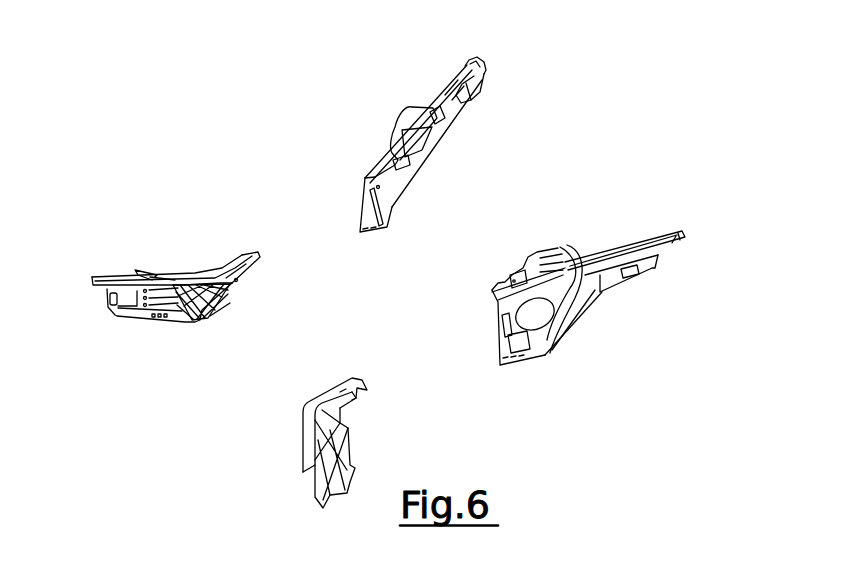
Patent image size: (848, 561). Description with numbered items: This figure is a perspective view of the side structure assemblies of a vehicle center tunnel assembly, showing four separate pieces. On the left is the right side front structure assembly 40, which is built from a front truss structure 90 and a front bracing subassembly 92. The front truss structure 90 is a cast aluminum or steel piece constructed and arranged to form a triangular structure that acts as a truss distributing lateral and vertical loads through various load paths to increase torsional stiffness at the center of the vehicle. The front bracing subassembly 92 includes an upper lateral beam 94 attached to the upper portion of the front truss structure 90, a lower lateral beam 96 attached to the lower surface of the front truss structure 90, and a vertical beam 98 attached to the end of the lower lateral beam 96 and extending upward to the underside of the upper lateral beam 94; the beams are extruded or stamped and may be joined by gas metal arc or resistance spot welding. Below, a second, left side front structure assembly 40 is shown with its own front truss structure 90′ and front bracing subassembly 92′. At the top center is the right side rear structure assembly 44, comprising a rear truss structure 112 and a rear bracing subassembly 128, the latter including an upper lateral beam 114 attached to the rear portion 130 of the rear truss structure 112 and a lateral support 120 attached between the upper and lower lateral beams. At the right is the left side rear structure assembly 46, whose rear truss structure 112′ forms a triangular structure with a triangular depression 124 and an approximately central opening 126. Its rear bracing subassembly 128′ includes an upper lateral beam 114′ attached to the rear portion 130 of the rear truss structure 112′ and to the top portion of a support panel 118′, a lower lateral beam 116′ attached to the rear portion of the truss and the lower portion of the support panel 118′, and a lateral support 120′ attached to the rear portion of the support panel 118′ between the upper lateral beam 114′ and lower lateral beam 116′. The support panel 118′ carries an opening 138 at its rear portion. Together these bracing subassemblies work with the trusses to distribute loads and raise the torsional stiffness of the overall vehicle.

The right side front structure assembly 40 is at (137, 197).
The right side rear structure assembly 44 is at (478, 132).
The left side rear structure assembly 46 is at (610, 250).
The front truss structure 90 is at (203, 270).
The front bracing subassembly 92 is at (110, 275).
The upper lateral beam 94 is at (130, 278).
The lower lateral beam 96 is at (147, 317).
The vertical beam 98 is at (108, 297).
The rear truss structure 112 is at (408, 123).
The upper lateral beam 114 is at (462, 63).
The lateral support 120 is at (485, 63).
The rear bracing subassembly 128 is at (488, 82).
The rear portion 130 is at (422, 102).
The rear truss structure 112′ is at (533, 260).
The upper lateral beam 114′ is at (657, 250).
The lower lateral beam 116′ is at (633, 287).
The support panel 118′ is at (620, 290).
The lateral support 120′ is at (685, 232).
The triangular depression 124 is at (517, 335).
The opening 126 is at (530, 313).
The rear bracing subassembly 128′ is at (667, 277).
The opening 138 is at (645, 262).
The front truss structure 90′ is at (343, 390).
The front bracing subassembly 92′ is at (357, 415).